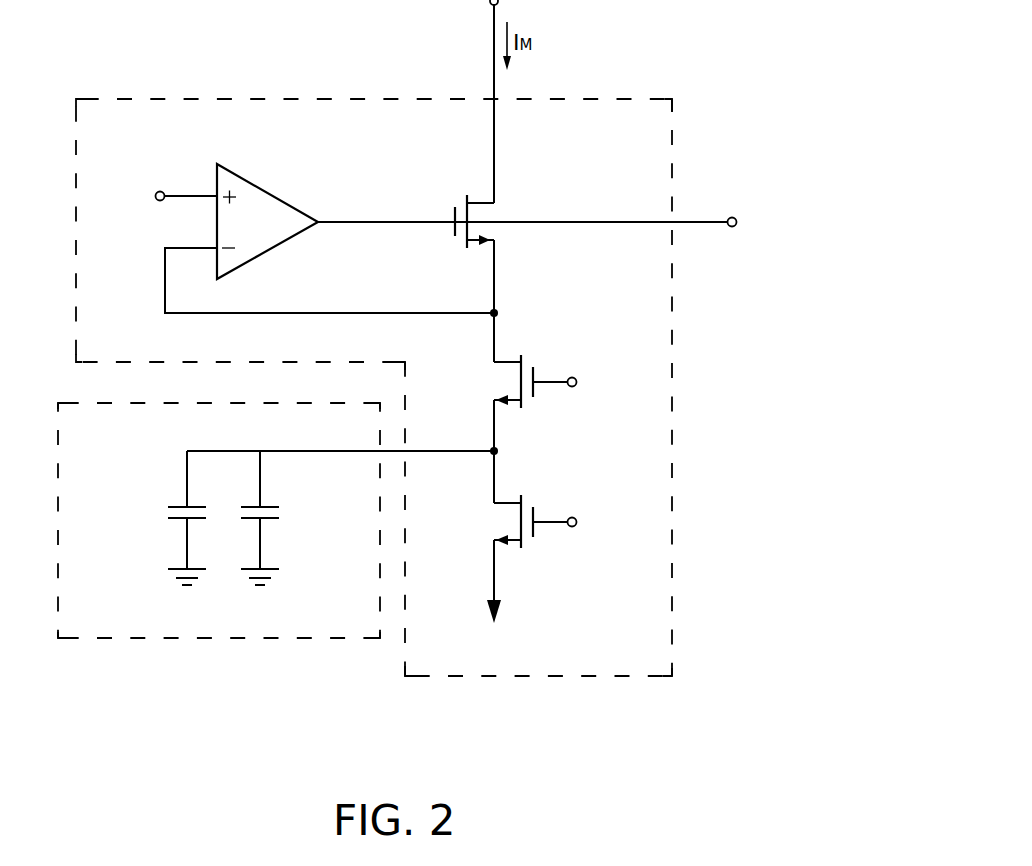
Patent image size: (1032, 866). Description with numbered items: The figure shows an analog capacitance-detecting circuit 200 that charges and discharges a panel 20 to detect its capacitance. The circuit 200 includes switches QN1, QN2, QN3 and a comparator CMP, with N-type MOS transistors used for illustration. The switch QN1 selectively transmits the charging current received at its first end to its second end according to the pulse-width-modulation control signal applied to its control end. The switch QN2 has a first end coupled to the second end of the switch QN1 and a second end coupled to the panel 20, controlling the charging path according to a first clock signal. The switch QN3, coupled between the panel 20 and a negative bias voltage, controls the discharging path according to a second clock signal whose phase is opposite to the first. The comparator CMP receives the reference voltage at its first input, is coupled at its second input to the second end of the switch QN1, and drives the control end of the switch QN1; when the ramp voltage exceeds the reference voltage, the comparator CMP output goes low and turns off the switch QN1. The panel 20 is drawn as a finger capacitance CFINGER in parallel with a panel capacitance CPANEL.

The analog capacitance-detecting circuit 200 is at (191, 97).
The panel 20 is at (205, 640).
The comparator CMP is at (261, 186).
The switch QN1 is at (500, 221).
The switch QN2 is at (535, 381).
The switch QN3 is at (535, 521).
The finger capacitance CFINGER is at (140, 518).
The panel capacitance CPANEL is at (291, 518).